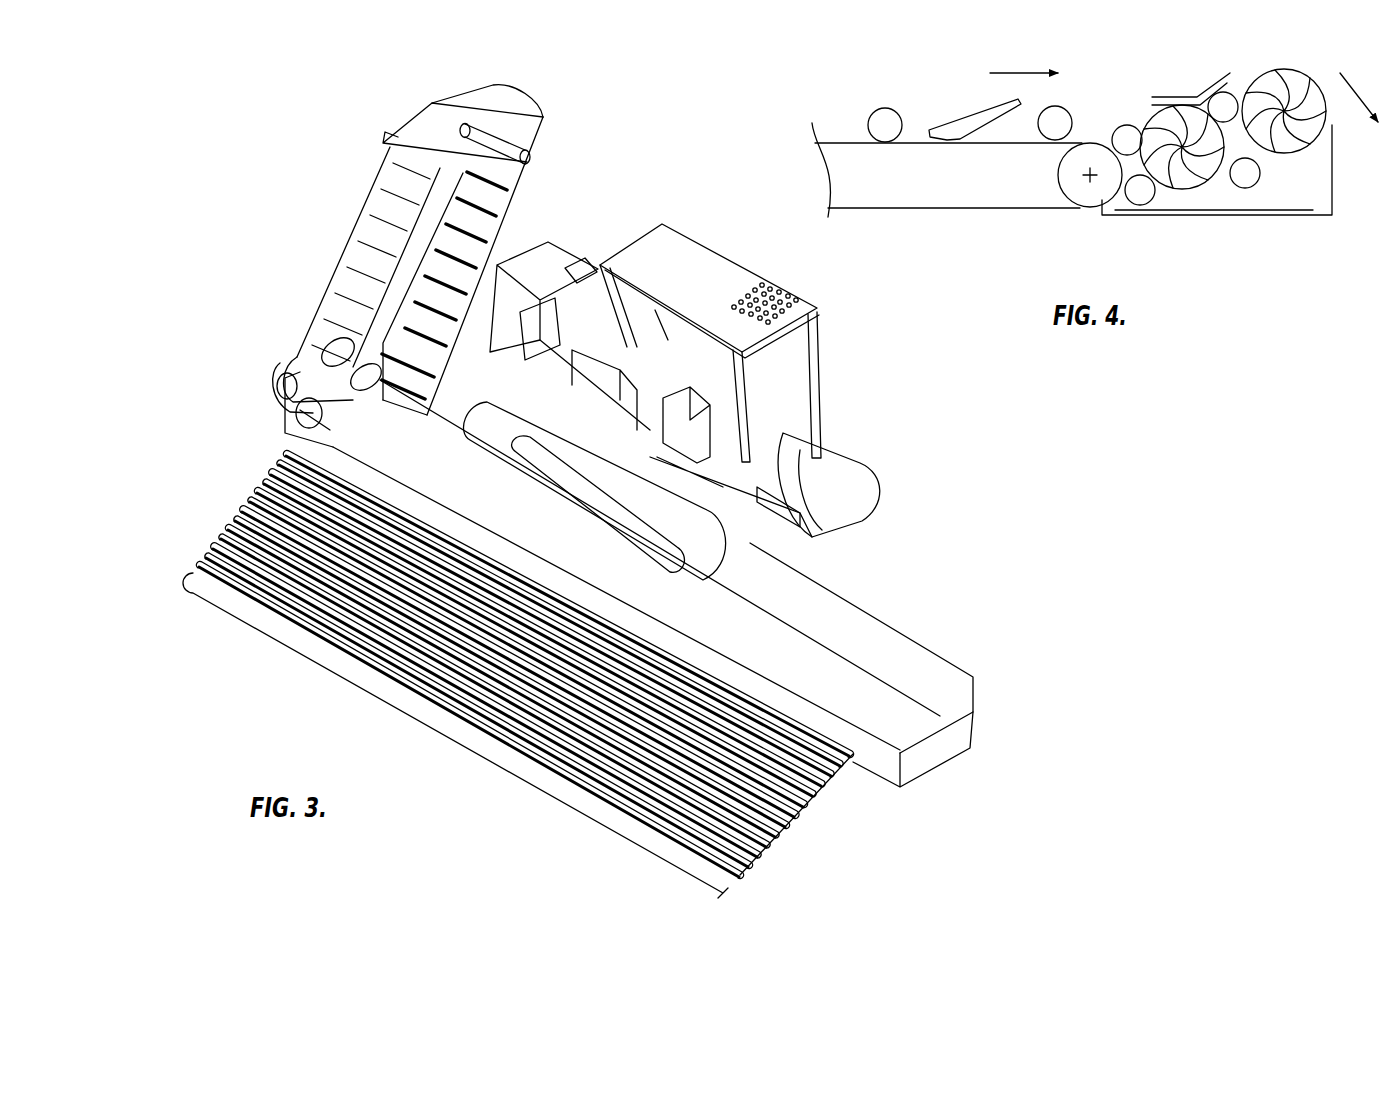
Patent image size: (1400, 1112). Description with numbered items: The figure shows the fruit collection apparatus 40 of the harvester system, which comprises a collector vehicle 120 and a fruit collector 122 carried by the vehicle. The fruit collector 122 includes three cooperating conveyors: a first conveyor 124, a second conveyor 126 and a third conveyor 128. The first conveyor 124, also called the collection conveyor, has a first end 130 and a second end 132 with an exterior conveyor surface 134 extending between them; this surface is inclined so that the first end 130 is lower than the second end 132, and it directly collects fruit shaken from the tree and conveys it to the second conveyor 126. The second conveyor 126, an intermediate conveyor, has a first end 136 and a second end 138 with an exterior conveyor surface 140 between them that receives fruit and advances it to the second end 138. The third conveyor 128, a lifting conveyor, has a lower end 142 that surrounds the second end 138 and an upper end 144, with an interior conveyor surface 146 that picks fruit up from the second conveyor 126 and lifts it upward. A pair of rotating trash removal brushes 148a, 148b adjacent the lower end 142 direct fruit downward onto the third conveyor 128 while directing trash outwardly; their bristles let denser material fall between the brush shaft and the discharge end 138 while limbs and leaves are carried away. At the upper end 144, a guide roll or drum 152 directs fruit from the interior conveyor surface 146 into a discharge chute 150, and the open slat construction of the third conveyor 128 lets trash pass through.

In FIG. 3, the fruit collection apparatus 40 is at (864, 264).
In FIG. 3, the collector vehicle 120 is at (855, 470).
In FIG. 3, the fruit collector 122 is at (171, 422).
In FIG. 3, the first conveyor 124 is at (523, 674).
In FIG. 3, the second conveyor 126 is at (707, 608).
In FIG. 4, the second conveyor 126 is at (928, 128).
In FIG. 3, the third conveyor 128 is at (414, 269).
In FIG. 4, the third conveyor 128 is at (1246, 205).
In FIG. 3, the first end of first conveyor 130 is at (655, 864).
In FIG. 3, the second end of first conveyor 132 is at (852, 765).
In FIG. 3, the exterior conveyor surface of first conveyor 134 is at (788, 832).
In FIG. 3, the first end of second conveyor 136 is at (953, 744).
In FIG. 3, the second end of second conveyor 138 is at (325, 430).
In FIG. 4, the second end of second conveyor 138 is at (1085, 208).
In FIG. 3, the exterior conveyor surface of second conveyor 140 is at (878, 695).
In FIG. 4, the exterior conveyor surface of second conveyor 140 is at (843, 140).
In FIG. 3, the lower end of third conveyor 142 is at (292, 420).
In FIG. 4, the lower end of third conveyor 142 is at (1313, 218).
In FIG. 3, the upper end of third conveyor 144 is at (386, 165).
In FIG. 3, the interior conveyor surface of third conveyor 146 is at (495, 232).
In FIG. 4, the interior conveyor surface of third conveyor 146 is at (1168, 213).
In FIG. 3, the first trash removal brush 148a is at (282, 390).
In FIG. 4, the first trash removal brush 148a is at (1207, 188).
In FIG. 3, the second trash removal brush 148b is at (292, 404).
In FIG. 4, the second trash removal brush 148b is at (1284, 156).
In FIG. 3, the discharge chute 150 is at (432, 104).
In FIG. 3, the guide roll or drum 152 is at (530, 152).